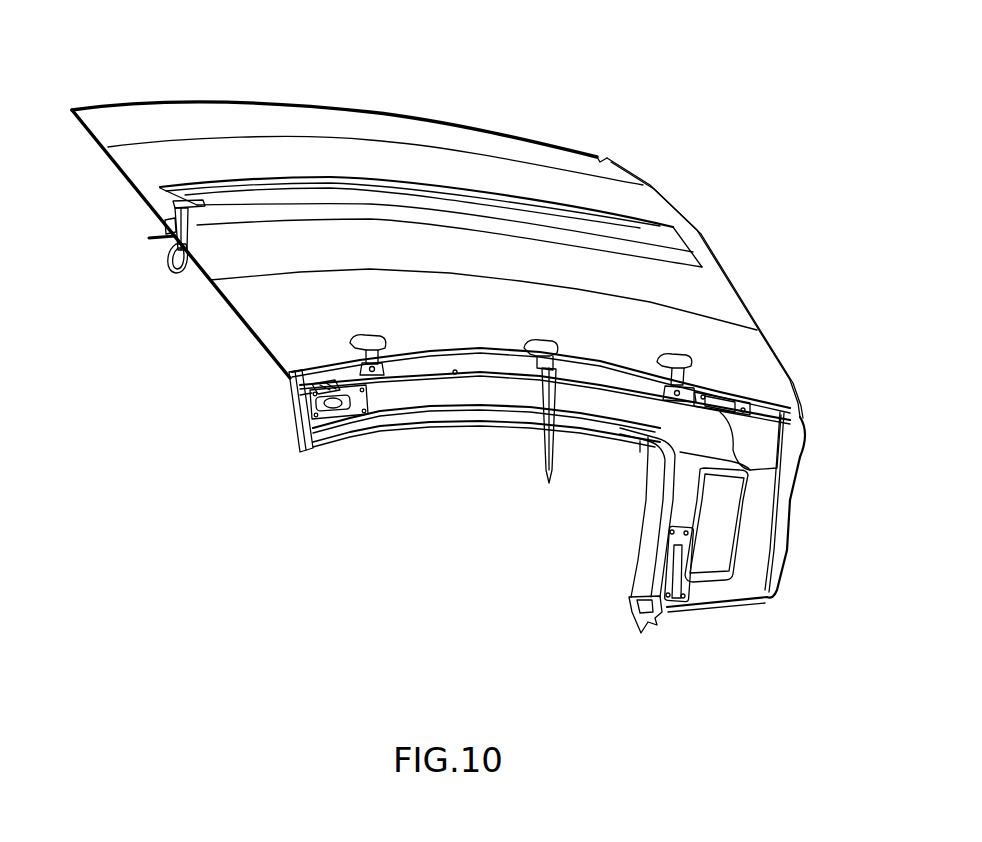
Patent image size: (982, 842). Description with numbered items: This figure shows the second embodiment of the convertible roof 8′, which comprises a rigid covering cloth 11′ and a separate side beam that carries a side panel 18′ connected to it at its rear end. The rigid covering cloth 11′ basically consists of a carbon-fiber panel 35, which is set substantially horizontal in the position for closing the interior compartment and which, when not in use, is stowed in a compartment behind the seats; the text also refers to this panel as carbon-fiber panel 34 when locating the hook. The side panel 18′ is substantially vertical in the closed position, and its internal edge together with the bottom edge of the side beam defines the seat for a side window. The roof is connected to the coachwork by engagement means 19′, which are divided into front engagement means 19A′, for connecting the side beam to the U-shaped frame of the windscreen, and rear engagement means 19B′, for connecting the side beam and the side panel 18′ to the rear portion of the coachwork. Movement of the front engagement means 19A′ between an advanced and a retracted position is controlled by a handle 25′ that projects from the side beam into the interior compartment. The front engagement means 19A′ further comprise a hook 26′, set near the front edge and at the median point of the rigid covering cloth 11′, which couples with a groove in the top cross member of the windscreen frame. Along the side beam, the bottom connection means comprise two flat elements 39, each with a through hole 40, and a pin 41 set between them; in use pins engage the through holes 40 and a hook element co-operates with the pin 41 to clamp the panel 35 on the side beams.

The rigid covering cloth 11′ is at (435, 105).
The convertible roof 8′ is at (755, 235).
The carbon-fiber panel 35 is at (630, 198).
The front engagement means 19A′ is at (110, 243).
The hook 26′ is at (162, 253).
The engagement means 19′ is at (197, 420).
The flat element 39 is at (373, 378).
The through hole 40 is at (373, 378).
The pin 41 is at (555, 360).
The handle 25′ is at (352, 420).
The side panel 18′ is at (812, 500).
The carbon-fiber panel 34 is at (707, 560).
The rear engagement means 19B′ is at (640, 630).